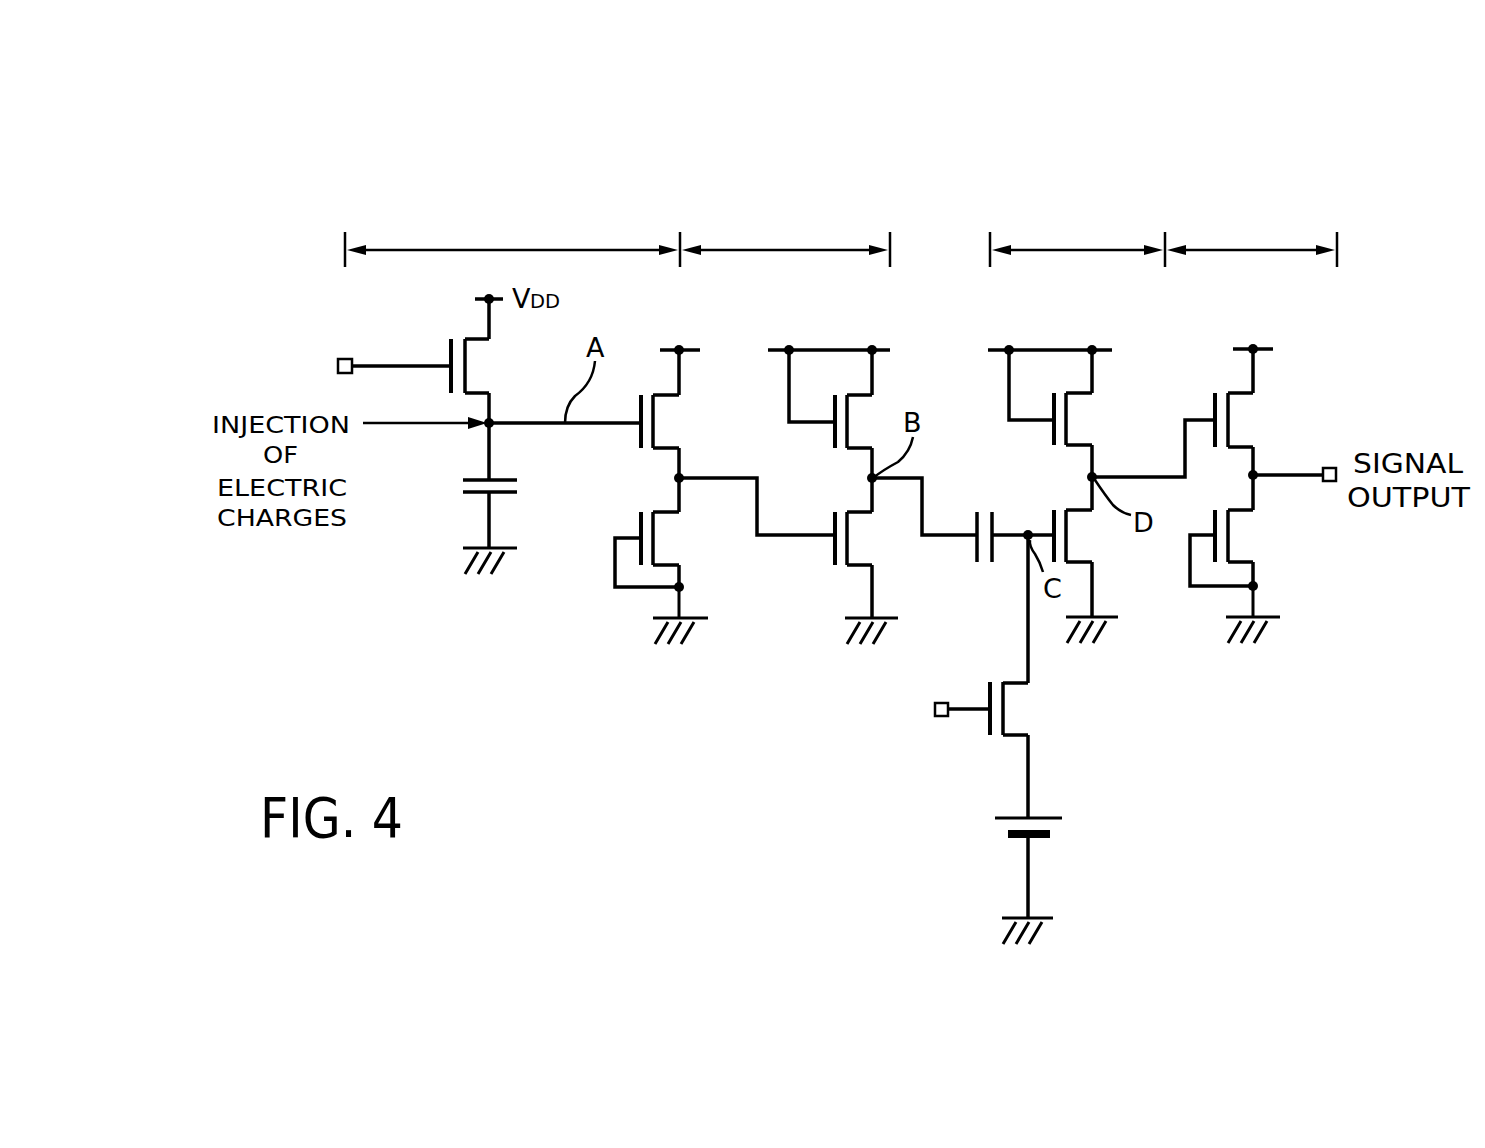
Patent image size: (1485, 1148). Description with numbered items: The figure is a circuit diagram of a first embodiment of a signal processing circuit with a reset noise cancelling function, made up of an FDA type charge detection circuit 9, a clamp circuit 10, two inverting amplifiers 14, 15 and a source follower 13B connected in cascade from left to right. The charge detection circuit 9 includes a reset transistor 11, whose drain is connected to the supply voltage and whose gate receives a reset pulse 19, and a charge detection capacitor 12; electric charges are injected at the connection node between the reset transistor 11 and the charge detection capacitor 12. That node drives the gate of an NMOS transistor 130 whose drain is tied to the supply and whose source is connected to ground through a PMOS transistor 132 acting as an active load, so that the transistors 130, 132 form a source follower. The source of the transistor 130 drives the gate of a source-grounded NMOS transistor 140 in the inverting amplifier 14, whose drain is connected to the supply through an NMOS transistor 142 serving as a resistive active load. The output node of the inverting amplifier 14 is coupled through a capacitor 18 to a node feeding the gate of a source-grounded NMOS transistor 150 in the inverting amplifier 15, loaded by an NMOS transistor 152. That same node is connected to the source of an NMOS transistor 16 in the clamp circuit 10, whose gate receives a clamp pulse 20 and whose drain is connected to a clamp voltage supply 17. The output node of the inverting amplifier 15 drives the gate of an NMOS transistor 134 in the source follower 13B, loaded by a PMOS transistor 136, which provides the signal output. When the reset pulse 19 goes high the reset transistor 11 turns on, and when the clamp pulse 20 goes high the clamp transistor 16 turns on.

The charge detection circuit 9 is at (512, 176).
The inverting amplifier 14 is at (785, 189).
The inverting amplifier 15 is at (1077, 173).
The source follower 13B is at (1261, 188).
The reset pulse 19 is at (338, 364).
The reset transistor 11 is at (487, 378).
The charge detection capacitor 12 is at (507, 494).
The NMOS transistor 130 is at (663, 422).
The PMOS transistor 132 is at (663, 542).
The NMOS transistor 142 is at (856, 415).
The NMOS transistor 140 is at (837, 565).
The capacitor 18 is at (987, 506).
The NMOS transistor 152 is at (1078, 420).
The NMOS transistor 150 is at (1083, 540).
The NMOS transistor 134 is at (1243, 420).
The PMOS transistor 136 is at (1252, 537).
The clamp circuit 10 is at (1082, 739).
The clamp transistor 16 is at (1001, 681).
The clamp pulse 20 is at (934, 719).
The clamp voltage supply 17 is at (1040, 843).